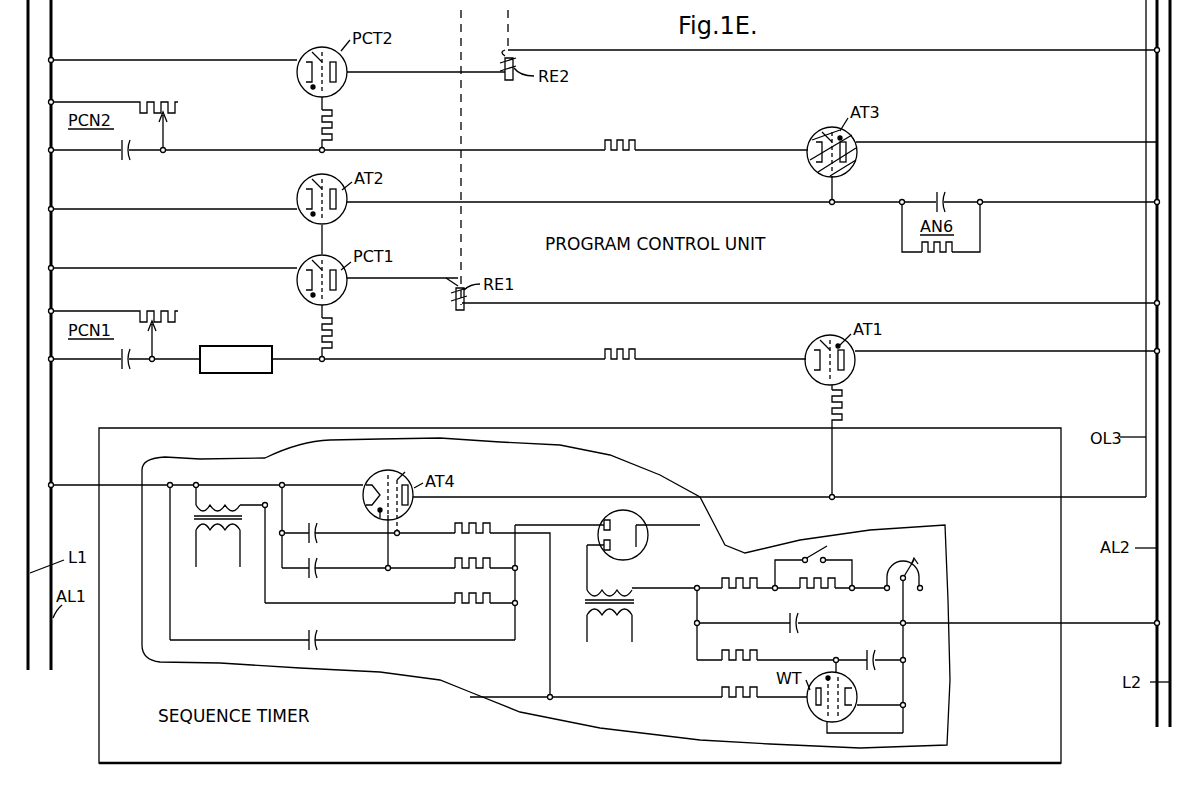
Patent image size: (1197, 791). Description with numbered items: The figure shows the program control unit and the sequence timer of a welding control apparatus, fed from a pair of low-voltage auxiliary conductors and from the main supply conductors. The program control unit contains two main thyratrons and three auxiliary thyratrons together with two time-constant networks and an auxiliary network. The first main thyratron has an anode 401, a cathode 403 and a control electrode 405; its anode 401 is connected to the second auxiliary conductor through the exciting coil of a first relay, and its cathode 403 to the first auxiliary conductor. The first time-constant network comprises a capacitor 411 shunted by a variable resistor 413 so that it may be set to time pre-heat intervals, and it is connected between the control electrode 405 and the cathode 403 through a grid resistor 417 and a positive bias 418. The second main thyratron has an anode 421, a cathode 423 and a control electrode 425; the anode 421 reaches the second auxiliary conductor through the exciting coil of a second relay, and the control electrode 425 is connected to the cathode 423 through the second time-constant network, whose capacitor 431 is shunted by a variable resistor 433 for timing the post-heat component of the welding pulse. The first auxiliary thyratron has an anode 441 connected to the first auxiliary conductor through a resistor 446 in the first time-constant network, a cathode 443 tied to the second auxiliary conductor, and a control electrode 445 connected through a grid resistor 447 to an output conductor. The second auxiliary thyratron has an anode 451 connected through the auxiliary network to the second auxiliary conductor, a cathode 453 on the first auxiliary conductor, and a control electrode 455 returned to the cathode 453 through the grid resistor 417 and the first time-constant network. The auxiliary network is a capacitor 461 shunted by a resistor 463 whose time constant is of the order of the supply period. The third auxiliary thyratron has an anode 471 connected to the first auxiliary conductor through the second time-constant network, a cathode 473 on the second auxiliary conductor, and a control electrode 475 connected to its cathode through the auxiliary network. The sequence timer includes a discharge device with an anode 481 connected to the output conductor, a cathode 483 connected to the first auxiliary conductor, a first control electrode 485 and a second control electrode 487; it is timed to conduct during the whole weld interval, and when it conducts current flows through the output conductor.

The control electrode 425 is at (311, 51).
The cathode 423 is at (305, 70).
The anode 421 is at (338, 78).
The variable resistor 433 is at (155, 100).
The capacitor 431 is at (122, 162).
The anode 471 is at (816, 144).
The cathode 473 is at (848, 155).
The control electrode 475 is at (818, 168).
The capacitor 461 is at (938, 193).
The resistor 463 is at (942, 256).
The control electrode 455 is at (311, 178).
The cathode 453 is at (306, 200).
The anode 451 is at (338, 208).
The control electrode 405 is at (311, 260).
The cathode 403 is at (306, 282).
The anode 401 is at (338, 284).
The variable resistor 413 is at (153, 311).
The grid resistor 417 is at (334, 336).
The capacitor 411 is at (125, 364).
The positive bias 418 is at (230, 376).
The resistor 446 is at (608, 350).
The control electrode 445 is at (819, 350).
The anode 441 is at (808, 372).
The cathode 443 is at (848, 365).
The grid resistor 447 is at (842, 408).
The first control electrode 485 is at (370, 485).
The second control electrode 487 is at (402, 480).
The cathode 483 is at (374, 512).
The anode 481 is at (408, 503).